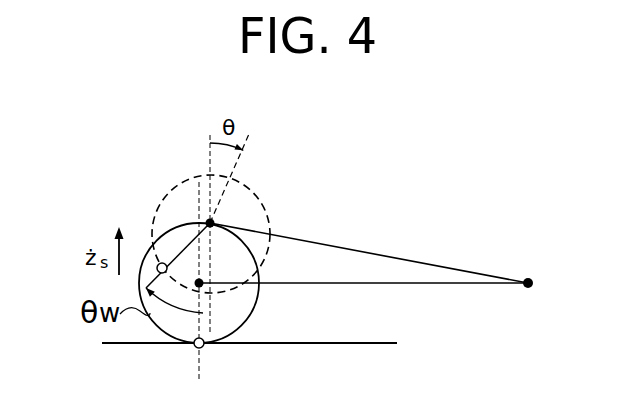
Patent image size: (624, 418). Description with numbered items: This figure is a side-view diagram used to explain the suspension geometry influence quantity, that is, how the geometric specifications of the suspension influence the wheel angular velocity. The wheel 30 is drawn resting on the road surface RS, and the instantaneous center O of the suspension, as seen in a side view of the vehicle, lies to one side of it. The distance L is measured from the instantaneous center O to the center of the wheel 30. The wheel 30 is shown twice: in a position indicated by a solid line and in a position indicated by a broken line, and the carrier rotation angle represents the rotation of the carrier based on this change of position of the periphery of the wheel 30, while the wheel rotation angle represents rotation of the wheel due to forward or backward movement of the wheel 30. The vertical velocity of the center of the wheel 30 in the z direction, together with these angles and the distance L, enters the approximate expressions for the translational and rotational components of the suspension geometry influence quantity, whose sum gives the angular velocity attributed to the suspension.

The wheel 30 is at (257, 306).
The road surface RS is at (354, 341).
The distance from the instantaneous center to the center of the wheel L is at (411, 286).
The instantaneous center of the suspension O is at (528, 267).